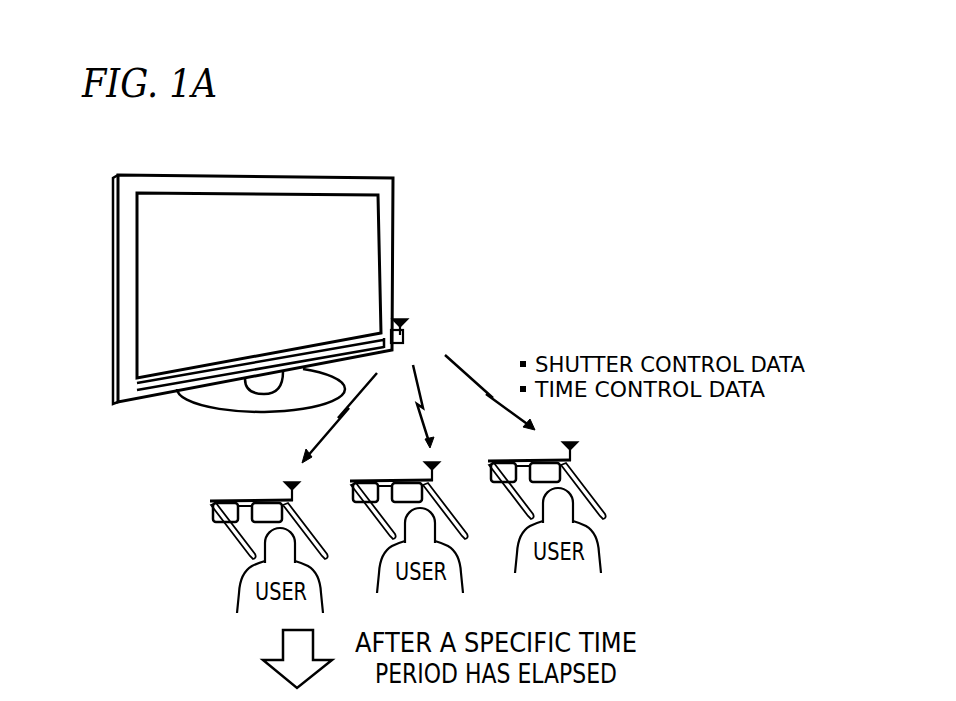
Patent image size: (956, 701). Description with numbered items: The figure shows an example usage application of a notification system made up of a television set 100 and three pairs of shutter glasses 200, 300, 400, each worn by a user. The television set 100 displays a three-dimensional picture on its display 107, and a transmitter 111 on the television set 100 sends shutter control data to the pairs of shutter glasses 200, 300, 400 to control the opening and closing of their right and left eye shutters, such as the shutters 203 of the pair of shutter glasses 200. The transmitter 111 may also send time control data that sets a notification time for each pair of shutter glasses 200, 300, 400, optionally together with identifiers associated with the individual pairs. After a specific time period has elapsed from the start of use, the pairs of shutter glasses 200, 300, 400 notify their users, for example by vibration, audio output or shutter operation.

The television set 100 is at (363, 178).
The display 107 is at (192, 207).
The transmitter 111 is at (389, 330).
The pair of shutter glasses 200 is at (210, 500).
The shutters 203 is at (268, 468).
The pair of shutter glasses 300 is at (352, 480).
The pair of shutter glasses 400 is at (488, 461).